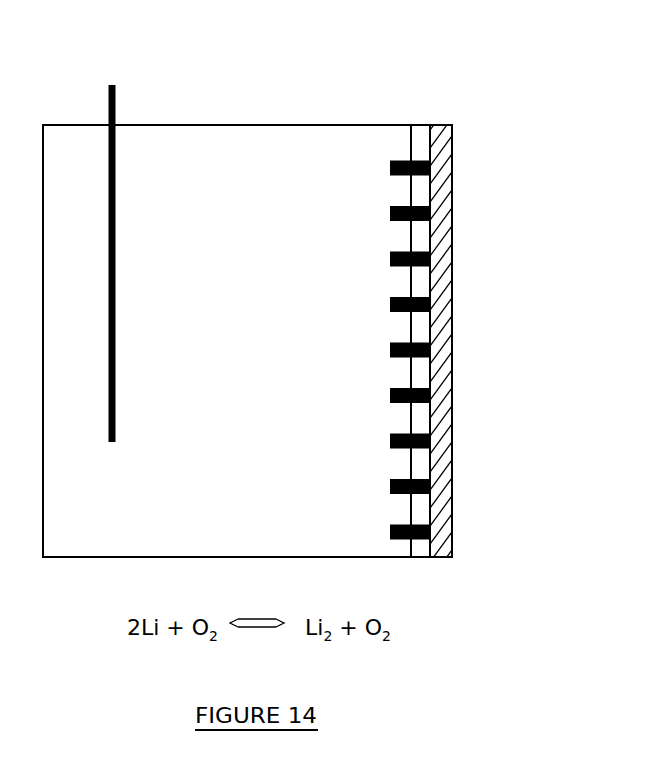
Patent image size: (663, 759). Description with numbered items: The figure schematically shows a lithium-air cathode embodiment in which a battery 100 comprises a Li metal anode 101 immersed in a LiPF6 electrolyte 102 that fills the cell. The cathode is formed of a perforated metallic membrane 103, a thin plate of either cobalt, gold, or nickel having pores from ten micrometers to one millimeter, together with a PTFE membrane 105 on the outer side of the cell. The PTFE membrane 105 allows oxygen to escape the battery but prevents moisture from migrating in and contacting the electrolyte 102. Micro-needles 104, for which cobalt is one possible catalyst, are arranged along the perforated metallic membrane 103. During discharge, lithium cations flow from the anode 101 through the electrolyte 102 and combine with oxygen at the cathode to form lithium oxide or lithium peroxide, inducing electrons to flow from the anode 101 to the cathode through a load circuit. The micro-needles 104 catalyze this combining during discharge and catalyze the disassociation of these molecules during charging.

The battery 100 is at (352, 98).
The Li metal anode 101 is at (117, 108).
The LiPF6 electrolyte 102 is at (222, 505).
The perforated metallic membrane 103 is at (422, 558).
The micro-needles 104 is at (392, 250).
The PTFE membrane 105 is at (452, 382).